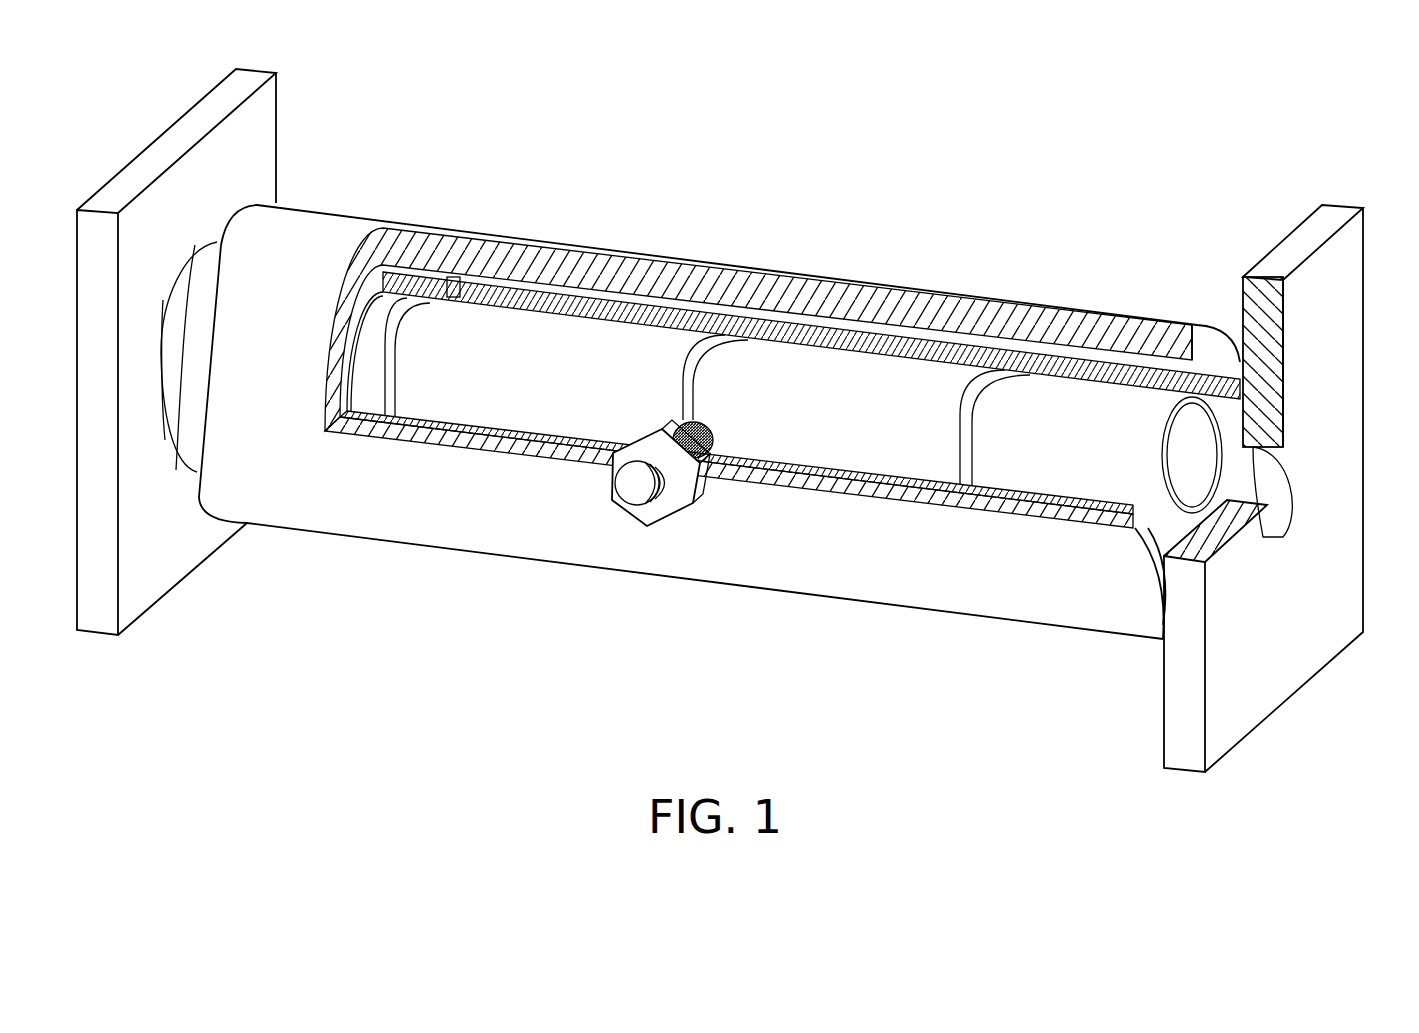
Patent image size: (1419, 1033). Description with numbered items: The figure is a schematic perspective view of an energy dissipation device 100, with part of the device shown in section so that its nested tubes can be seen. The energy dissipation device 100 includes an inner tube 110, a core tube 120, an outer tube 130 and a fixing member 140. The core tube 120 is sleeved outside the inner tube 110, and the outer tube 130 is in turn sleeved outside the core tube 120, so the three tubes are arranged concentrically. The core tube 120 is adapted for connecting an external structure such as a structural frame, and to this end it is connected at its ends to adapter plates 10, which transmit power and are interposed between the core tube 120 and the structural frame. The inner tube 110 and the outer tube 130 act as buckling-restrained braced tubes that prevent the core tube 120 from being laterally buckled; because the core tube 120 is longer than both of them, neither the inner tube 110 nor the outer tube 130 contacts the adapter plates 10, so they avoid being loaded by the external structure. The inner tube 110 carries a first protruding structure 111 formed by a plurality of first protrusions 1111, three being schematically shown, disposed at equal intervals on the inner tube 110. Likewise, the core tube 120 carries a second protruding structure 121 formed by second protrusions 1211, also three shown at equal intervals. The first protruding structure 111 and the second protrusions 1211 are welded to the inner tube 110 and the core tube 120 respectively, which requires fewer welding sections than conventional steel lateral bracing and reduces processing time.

The adapter plate 10 is at (85, 333).
The energy dissipation device 100 is at (758, 454).
The inner tube 110 is at (726, 475).
The first protruding structure 111 is at (729, 511).
The first protrusion 1111 is at (1010, 727).
The core tube 120 is at (811, 319).
The second protruding structure 121 is at (716, 305).
The second protrusion 1211 is at (1047, 217).
The outer tube 130 is at (1133, 337).
The fixing member 140 is at (640, 498).